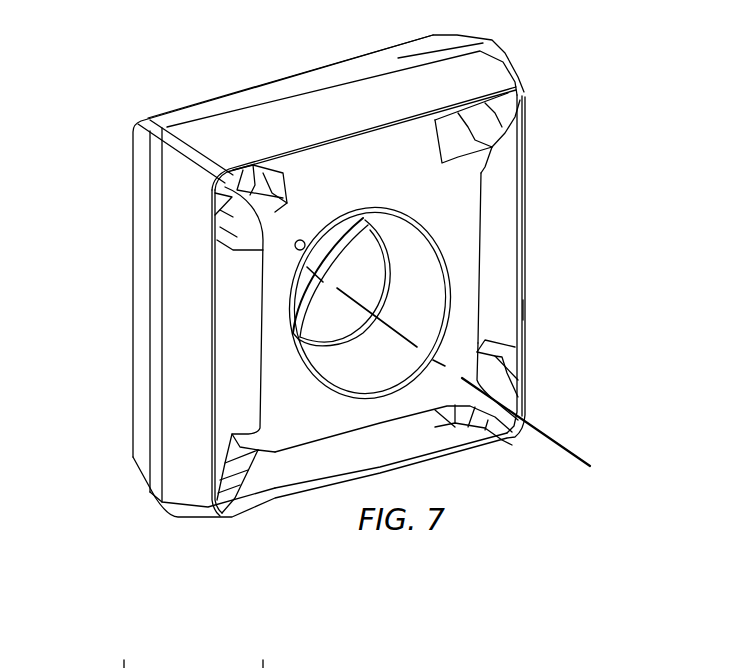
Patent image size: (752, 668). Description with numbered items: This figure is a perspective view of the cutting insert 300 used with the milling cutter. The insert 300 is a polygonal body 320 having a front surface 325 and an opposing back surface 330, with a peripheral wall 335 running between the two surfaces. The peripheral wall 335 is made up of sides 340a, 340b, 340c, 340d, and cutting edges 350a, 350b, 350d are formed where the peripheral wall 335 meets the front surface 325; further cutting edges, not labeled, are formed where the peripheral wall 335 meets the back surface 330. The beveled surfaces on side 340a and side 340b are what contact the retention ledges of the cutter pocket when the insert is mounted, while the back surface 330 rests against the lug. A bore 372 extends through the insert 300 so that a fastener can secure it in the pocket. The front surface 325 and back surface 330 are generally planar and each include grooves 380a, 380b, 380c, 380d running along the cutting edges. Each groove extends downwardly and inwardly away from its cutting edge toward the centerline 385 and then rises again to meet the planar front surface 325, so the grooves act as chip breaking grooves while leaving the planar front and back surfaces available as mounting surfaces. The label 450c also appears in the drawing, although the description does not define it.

The insert 300 is at (213, 53).
The polygonal body 320 is at (520, 187).
The front surface 325 is at (480, 253).
The back surface 330 is at (158, 113).
The peripheral wall 335 is at (310, 82).
The side 340a is at (534, 307).
The side 340b is at (320, 500).
The side 340c is at (150, 290).
The side 340d is at (390, 46).
The cutting edge 350a is at (520, 230).
The cutting edge 350b is at (452, 453).
The cutting edge 350d is at (312, 146).
The bore 372 is at (330, 252).
The groove 380a is at (498, 325).
The groove 380b is at (392, 450).
The groove 380c is at (232, 325).
The groove 380d is at (410, 137).
The centerline 385 is at (563, 447).
The land inner edge 450c is at (212, 390).